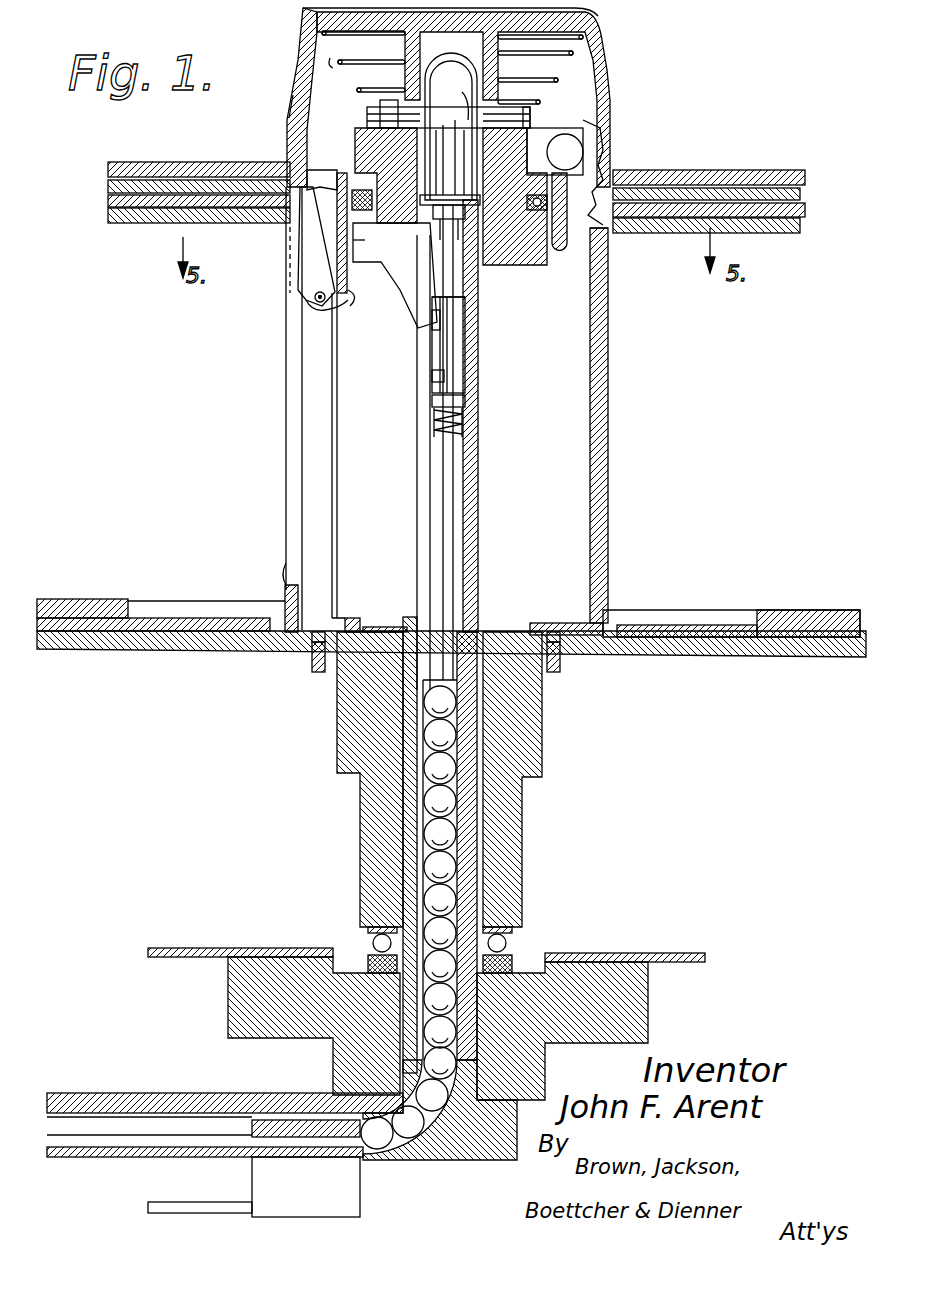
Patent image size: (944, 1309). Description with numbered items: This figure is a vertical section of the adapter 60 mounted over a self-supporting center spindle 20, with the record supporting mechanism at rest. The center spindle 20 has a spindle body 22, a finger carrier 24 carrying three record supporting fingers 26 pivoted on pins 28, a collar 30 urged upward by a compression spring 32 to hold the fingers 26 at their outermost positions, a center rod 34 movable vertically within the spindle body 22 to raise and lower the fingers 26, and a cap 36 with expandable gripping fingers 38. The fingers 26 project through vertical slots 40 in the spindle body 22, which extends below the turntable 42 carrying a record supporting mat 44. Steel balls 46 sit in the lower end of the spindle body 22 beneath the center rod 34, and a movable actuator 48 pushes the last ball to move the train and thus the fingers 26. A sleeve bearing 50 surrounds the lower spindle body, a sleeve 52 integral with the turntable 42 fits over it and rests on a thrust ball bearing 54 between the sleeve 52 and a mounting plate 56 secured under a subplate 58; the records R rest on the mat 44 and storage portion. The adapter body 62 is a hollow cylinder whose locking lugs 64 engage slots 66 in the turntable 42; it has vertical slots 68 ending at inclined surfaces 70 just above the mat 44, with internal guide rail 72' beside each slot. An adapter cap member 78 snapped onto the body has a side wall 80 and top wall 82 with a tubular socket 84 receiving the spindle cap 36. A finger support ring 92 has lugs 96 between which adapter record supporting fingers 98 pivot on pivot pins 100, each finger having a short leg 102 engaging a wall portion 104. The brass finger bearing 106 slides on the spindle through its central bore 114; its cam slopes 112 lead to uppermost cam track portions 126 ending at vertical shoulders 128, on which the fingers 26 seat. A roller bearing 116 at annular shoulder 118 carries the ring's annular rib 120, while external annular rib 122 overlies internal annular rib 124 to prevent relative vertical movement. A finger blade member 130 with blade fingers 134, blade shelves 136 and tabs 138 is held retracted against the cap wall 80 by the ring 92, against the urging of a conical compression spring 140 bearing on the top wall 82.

The self-supporting center spindle 20 is at (480, 352).
The spindle body 22 is at (480, 470).
The finger carrier 24 is at (460, 315).
The record supporting fingers 26 is at (413, 305).
The pins 28 is at (432, 388).
The collar 30 is at (465, 402).
The compression spring 32 is at (436, 420).
The center rod 34 is at (453, 556).
The cap 36 is at (462, 98).
The gripping fingers 38 is at (447, 140).
The vertical slots 40 is at (417, 505).
The turntable 42 is at (718, 658).
The record supporting mat 44 is at (702, 610).
The steel balls 46 is at (448, 800).
The movable actuator 48 is at (275, 1125).
The sleeve bearing 50 is at (390, 815).
The sleeve 52 is at (510, 852).
The thrust ball bearing 54 is at (514, 943).
The mounting plate 56 is at (622, 1001).
The subplate 58 is at (692, 953).
The adapter 60 is at (617, 64).
The adapter body 62 is at (608, 352).
The locking lugs 64 is at (316, 662).
The slots 66 is at (308, 640).
The vertical slots 68 is at (292, 442).
The inclined surfaces 70 is at (285, 575).
The internal rib 72' is at (369, 462).
The adapter cap member 78 is at (295, 58).
The side wall 80 is at (290, 107).
The top wall 82 is at (578, 10).
The tubular socket 84 is at (398, 68).
The finger support ring 92 is at (345, 135).
The first lug 96 is at (333, 172).
The adapter record supporting finger 98 is at (314, 298).
The pivot pin 100 is at (318, 306).
The short leg 102 is at (345, 312).
The wall portion 104 is at (356, 290).
The finger bearing 106 is at (545, 265).
The rotary cam slopes 112 is at (325, 240).
The central bore 114 is at (555, 151).
The roller bearing 116 is at (605, 156).
The annular shoulder 118 is at (528, 266).
The annular rib 120 is at (315, 166).
The external annular rib 122 is at (540, 118).
The internal annular rib 124 is at (603, 132).
The uppermost cam track portion 126 is at (364, 240).
The vertical shoulder 128 is at (381, 262).
The finger blade member 130 is at (612, 125).
The blade fingers 134 is at (605, 172).
The blade shelf 136 is at (608, 282).
The tabs 138 is at (380, 107).
The conical compression spring 140 is at (332, 62).
The rails R is at (768, 170).